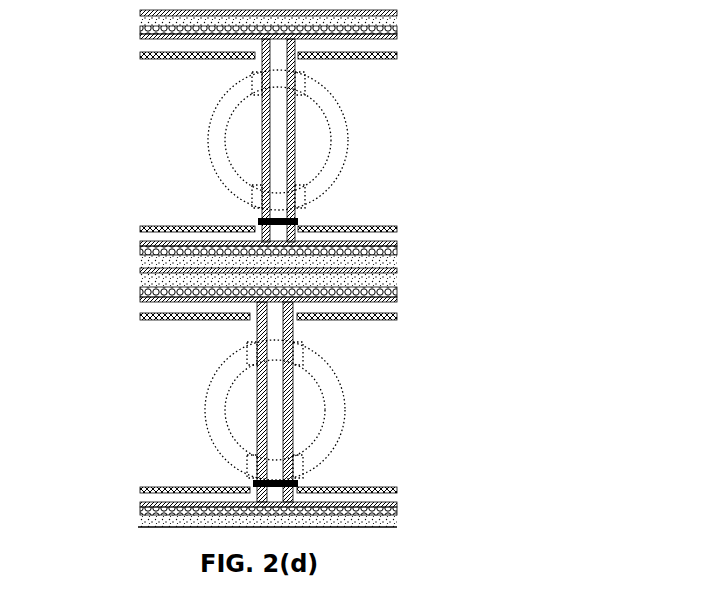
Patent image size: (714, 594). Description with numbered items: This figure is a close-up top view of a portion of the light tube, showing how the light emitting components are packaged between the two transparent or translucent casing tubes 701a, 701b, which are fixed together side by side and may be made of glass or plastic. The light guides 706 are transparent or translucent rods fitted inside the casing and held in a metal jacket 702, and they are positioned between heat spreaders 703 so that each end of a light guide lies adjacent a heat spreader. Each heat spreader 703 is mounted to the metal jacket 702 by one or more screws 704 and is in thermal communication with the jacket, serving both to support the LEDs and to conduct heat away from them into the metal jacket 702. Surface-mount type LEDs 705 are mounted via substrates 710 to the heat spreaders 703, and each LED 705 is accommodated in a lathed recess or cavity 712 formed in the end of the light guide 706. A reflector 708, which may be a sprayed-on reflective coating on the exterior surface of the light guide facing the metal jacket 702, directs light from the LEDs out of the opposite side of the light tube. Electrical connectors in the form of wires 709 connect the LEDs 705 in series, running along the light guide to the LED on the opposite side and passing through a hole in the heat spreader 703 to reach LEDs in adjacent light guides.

The metal jacket 702 is at (168, 33).
The cavity 712 is at (213, 100).
The heat spreader 703 is at (273, 122).
The screw 704 is at (273, 145).
The LED 705 is at (245, 163).
The light guide 706 is at (202, 208).
The casing tube 701a is at (173, 259).
The reflector 708 is at (187, 318).
The substrate 710 is at (258, 386).
The wire 709 is at (270, 482).
The casing tube 701b is at (142, 518).